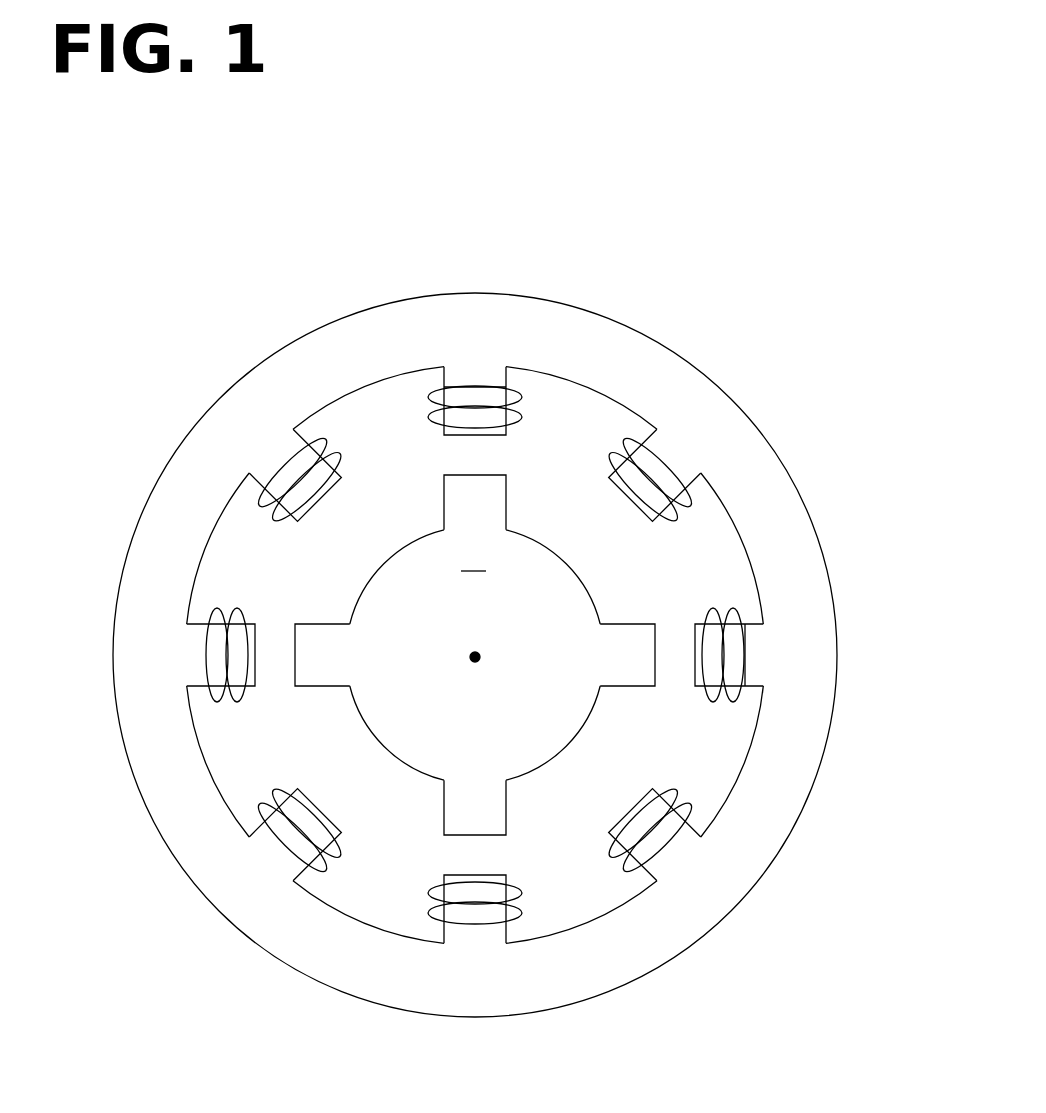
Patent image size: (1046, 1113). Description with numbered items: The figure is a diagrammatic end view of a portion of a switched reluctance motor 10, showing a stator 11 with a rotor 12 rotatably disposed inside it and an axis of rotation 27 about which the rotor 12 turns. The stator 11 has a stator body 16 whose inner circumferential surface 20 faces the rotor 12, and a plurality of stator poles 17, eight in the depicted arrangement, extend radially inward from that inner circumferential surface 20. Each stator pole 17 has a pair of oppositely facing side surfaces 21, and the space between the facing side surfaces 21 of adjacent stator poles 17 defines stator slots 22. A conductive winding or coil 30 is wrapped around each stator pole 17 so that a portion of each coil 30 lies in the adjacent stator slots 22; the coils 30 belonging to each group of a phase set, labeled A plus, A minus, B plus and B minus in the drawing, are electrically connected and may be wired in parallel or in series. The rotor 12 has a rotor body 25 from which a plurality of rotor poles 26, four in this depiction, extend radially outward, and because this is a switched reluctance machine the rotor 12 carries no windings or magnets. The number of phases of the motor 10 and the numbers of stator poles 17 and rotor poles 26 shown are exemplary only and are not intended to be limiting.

The switched reluctance motor 10 is at (626, 313).
The stator 11 is at (693, 385).
The rotor 12 is at (579, 571).
The stator body 16 is at (762, 862).
The stator pole 17 is at (505, 421).
The inner circumferential surface 20 is at (400, 378).
The side surface 21 is at (443, 384).
The stator slot 22 is at (379, 452).
The rotor body 25 is at (475, 655).
The rotor pole 26 is at (507, 490).
The axis of rotation 27 is at (483, 652).
The coil 30 is at (628, 450).